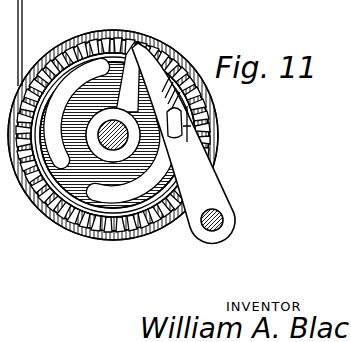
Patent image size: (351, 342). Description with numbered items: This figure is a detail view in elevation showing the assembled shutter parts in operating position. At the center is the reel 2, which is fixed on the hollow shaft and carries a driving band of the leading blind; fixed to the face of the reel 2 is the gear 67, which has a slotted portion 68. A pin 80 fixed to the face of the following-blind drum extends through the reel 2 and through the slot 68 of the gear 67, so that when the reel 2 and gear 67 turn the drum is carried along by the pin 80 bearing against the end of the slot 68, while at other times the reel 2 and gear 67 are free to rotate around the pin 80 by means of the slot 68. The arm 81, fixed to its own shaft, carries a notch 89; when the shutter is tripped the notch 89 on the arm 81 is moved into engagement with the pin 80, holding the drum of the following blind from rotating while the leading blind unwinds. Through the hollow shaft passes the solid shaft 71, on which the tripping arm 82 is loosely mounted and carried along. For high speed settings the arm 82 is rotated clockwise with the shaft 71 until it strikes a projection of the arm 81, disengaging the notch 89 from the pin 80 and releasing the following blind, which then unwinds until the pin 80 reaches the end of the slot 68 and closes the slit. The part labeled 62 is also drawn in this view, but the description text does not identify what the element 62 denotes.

The reel 2 is at (157, 44).
The lever spoke 62 is at (121, 92).
The gear 67 is at (127, 226).
The slot 68 is at (62, 88).
The shaft 71 is at (110, 147).
The pin 80 is at (190, 112).
The arm 81 is at (210, 183).
The tripping arm 82 is at (226, 220).
The notch 89 is at (190, 132).